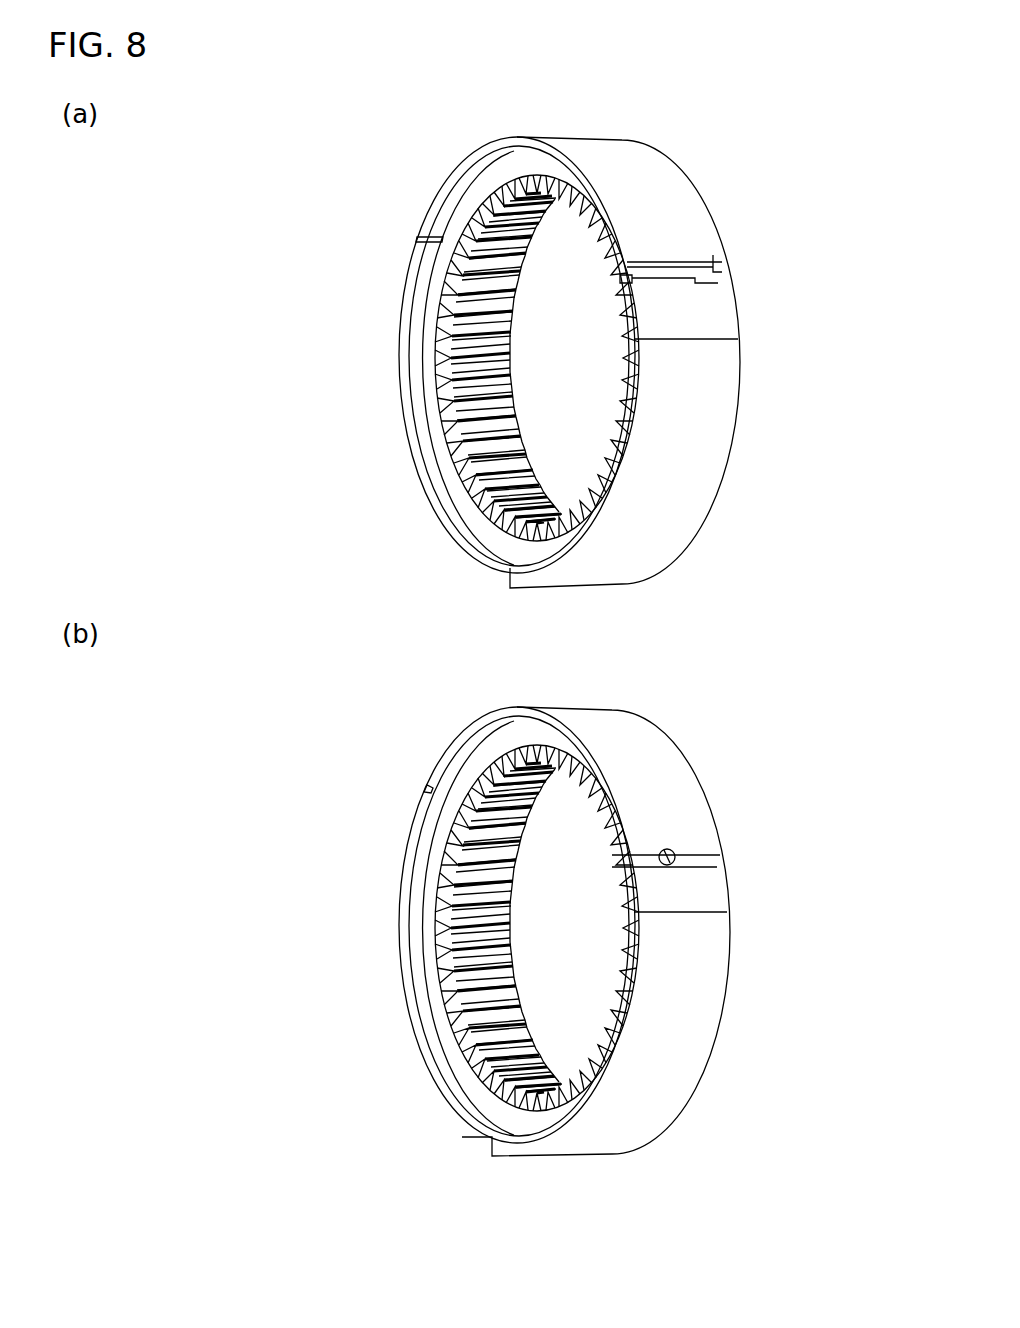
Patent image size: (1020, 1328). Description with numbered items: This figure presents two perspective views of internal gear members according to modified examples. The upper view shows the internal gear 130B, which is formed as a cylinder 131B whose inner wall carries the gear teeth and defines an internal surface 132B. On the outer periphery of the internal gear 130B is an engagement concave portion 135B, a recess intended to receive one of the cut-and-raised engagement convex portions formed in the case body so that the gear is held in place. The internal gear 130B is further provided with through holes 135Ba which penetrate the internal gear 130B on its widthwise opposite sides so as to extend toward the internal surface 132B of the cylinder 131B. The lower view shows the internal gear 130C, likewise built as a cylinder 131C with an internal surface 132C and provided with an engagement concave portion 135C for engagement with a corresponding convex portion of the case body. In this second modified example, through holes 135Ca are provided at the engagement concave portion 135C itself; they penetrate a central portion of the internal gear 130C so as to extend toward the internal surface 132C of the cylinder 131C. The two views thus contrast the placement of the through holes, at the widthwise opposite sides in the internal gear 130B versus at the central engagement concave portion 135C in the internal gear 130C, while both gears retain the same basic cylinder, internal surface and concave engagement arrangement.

The internal gear 130B is at (355, 246).
The cylinder 131B is at (403, 380).
The internal surface 132B is at (425, 470).
The engagement concave portion 135B is at (668, 288).
The through holes 135Ba is at (430, 237).
The internal gear 130C is at (355, 771).
The cylinder 131C is at (402, 930).
The internal surface 132C is at (423, 1025).
The engagement concave portion 135C is at (676, 881).
The through holes 135Ca is at (668, 850).